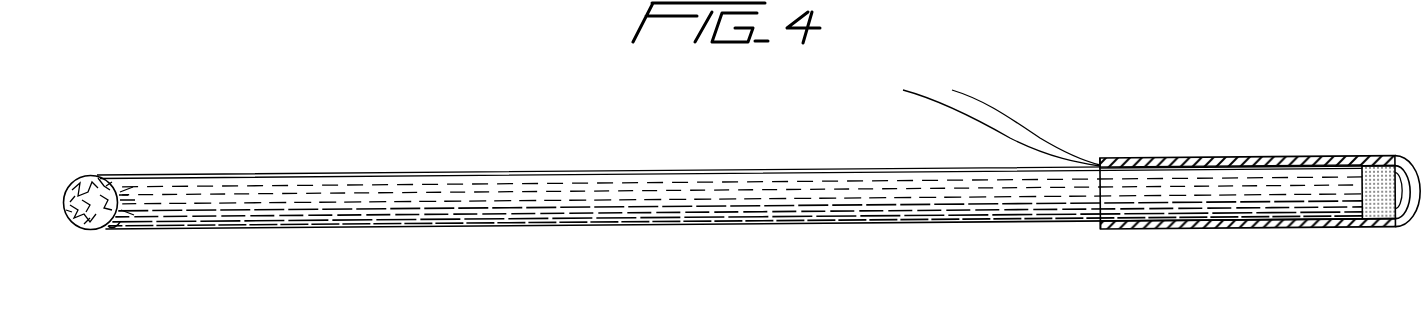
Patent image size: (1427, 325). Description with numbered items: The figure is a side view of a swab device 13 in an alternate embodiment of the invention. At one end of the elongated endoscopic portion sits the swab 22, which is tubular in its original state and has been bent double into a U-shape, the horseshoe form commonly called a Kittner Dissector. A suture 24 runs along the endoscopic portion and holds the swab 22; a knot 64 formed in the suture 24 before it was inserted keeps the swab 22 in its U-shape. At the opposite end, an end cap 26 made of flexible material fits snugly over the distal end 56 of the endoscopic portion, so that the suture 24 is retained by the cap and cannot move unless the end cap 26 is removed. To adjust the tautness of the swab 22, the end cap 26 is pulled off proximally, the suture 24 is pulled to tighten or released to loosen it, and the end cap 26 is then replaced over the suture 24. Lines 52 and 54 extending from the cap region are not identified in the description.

The swab device 13 is at (519, 140).
The swab 22 is at (89, 180).
The suture 24 is at (590, 193).
The end cap 26 is at (1208, 226).
The conductor wire 52 is at (986, 106).
The conductor wire 54 is at (963, 113).
The distal end 56 is at (117, 222).
The knot 64 is at (133, 193).